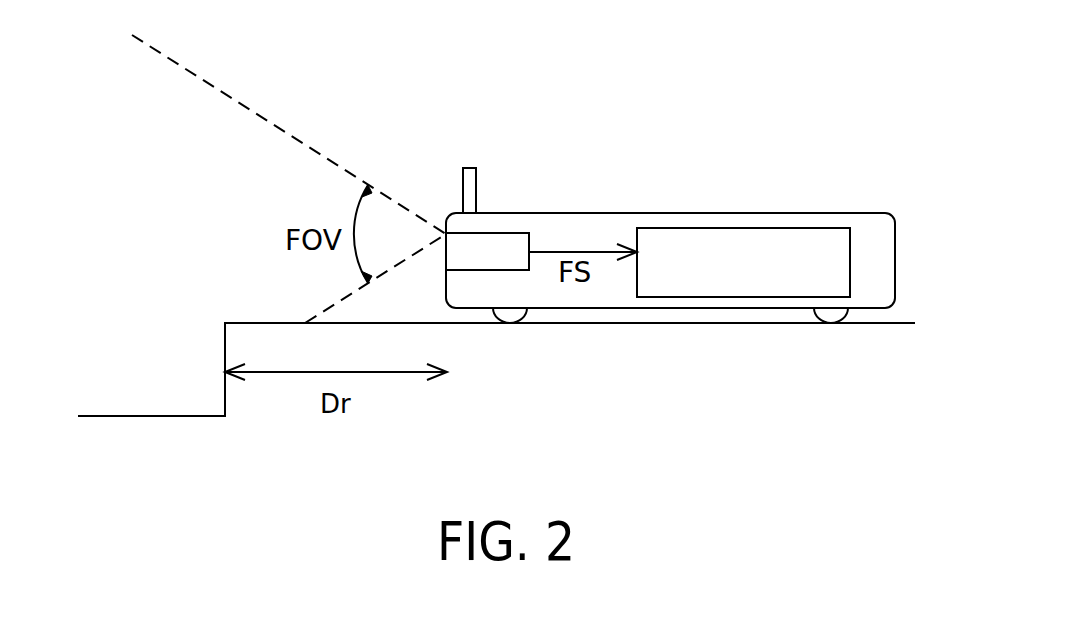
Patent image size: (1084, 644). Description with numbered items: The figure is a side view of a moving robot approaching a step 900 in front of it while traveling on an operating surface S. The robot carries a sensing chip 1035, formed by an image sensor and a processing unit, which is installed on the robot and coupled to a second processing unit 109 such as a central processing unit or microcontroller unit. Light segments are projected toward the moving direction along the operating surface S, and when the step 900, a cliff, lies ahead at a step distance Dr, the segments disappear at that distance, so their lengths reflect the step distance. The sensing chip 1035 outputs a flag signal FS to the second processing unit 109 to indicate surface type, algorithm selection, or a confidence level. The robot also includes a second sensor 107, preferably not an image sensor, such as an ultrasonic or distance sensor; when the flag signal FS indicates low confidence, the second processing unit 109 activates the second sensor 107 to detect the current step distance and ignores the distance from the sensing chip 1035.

The second sensor 107 is at (468, 168).
The sensing chip 1035 is at (508, 233).
The second processing unit 109 is at (727, 228).
The step 900 is at (225, 378).
The operating surface S is at (905, 323).